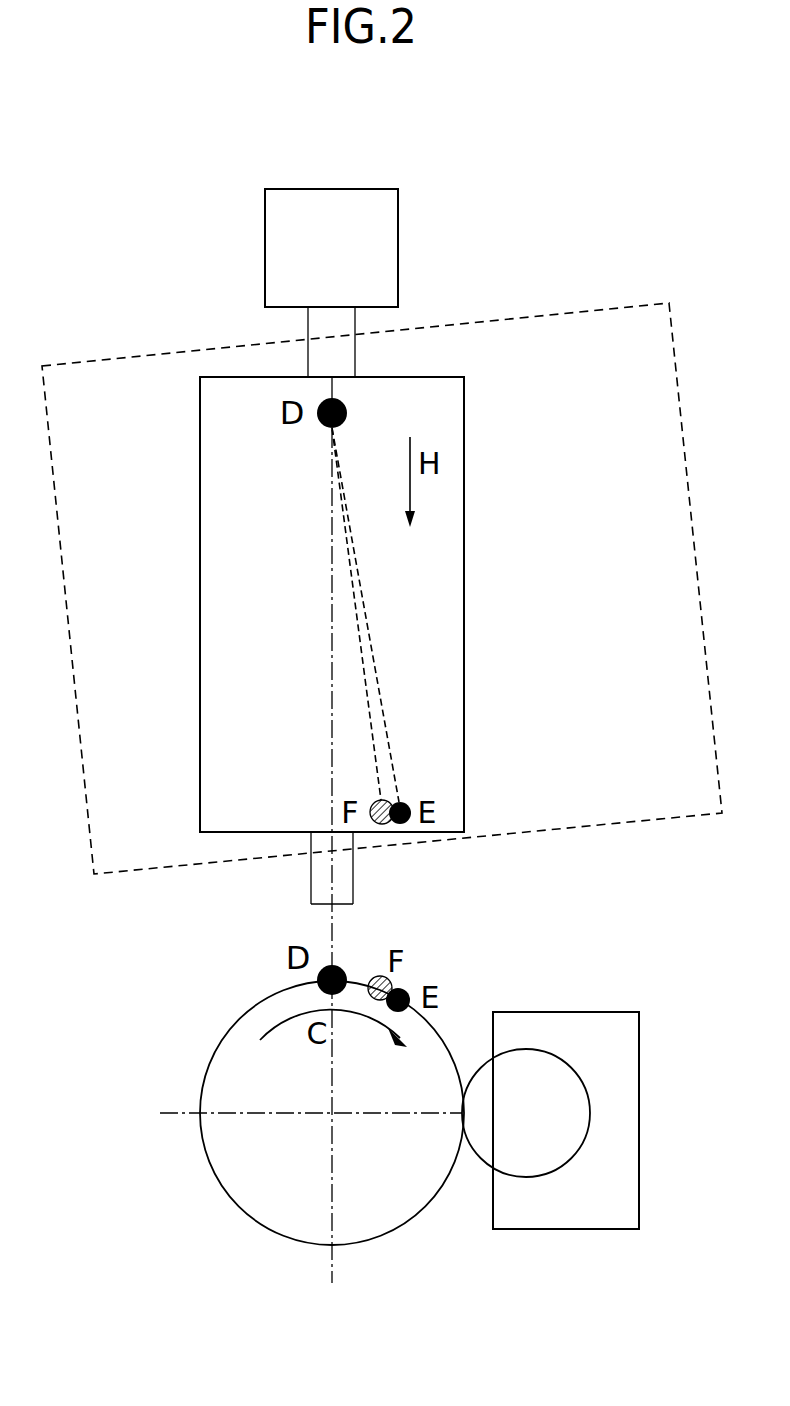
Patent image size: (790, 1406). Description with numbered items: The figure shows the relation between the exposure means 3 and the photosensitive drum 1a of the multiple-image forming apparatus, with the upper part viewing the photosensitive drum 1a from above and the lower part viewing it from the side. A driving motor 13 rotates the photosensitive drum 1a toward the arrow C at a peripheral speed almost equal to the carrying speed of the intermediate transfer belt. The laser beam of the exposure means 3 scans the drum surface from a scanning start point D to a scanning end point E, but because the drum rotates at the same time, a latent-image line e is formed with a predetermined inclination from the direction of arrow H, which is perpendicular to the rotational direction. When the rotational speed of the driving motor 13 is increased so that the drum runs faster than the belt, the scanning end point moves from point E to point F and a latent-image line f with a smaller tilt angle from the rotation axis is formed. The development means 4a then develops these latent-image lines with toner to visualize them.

The photosensitive drum 1a is at (447, 577).
The exposure means 3 is at (597, 307).
The development means 4a is at (633, 970).
The driving motor 13 is at (382, 268).
The latent-image line e is at (388, 732).
The latent-image line f is at (374, 758).